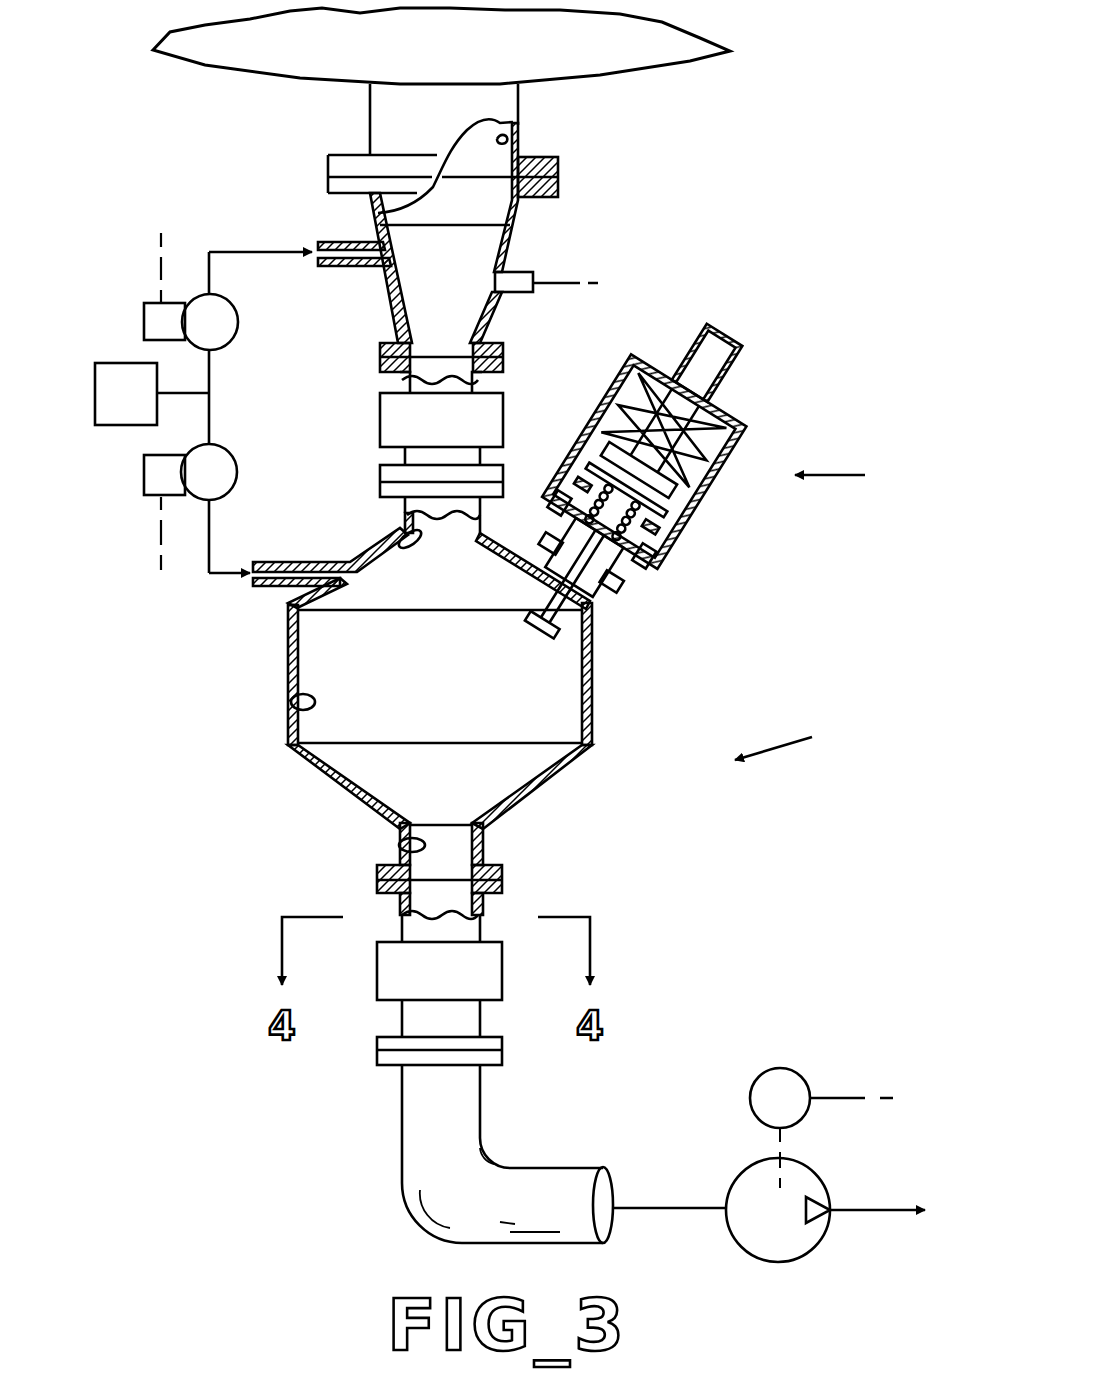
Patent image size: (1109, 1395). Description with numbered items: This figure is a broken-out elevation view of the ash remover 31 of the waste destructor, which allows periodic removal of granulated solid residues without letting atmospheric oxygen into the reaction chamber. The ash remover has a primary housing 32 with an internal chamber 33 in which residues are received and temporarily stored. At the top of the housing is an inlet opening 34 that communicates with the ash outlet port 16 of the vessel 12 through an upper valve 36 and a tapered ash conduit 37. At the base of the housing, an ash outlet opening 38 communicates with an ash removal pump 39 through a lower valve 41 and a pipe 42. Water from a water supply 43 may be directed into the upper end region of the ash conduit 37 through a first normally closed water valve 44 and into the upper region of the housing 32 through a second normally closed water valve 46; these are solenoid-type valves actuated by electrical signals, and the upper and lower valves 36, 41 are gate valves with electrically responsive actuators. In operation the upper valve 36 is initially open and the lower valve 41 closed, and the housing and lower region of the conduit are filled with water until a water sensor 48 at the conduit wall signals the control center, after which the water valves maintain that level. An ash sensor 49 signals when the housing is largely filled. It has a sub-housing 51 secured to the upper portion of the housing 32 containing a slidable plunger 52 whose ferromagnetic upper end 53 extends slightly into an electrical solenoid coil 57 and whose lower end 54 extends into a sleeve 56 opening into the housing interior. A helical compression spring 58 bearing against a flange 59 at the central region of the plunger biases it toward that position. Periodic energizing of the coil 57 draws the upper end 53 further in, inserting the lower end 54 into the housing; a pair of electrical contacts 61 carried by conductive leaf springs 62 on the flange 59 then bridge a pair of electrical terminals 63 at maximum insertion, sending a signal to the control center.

The vessel 12 is at (445, 52).
The ash outlet port 16 is at (507, 141).
The ash remover 31 is at (800, 740).
The primary housing 32 is at (288, 650).
The internal chamber 33 is at (298, 716).
The inlet opening 34 is at (385, 553).
The upper valve 36 is at (458, 437).
The tapered ash conduit 37 is at (388, 301).
The ash outlet opening 38 is at (400, 849).
The ash removal pump 39 is at (822, 1175).
The lower valve 41 is at (452, 990).
The pipe 42 is at (402, 1182).
The water supply 43 is at (110, 410).
The first water valve 44 is at (230, 343).
The second water valve 46 is at (235, 462).
The water sensor 48 is at (522, 273).
The ash sensor 49 is at (850, 476).
The sub-housing 51 is at (696, 457).
The plunger 52 is at (572, 576).
The upper end 53 is at (684, 399).
The lower end 54 is at (542, 624).
The sleeve 56 is at (507, 569).
The solenoid coil 57 is at (663, 430).
The helical compression spring 58 is at (584, 557).
The flange 59 is at (627, 490).
The electrical contacts 61 is at (617, 506).
The conductive leaf springs 62 is at (612, 512).
The electrical terminals 63 is at (592, 544).